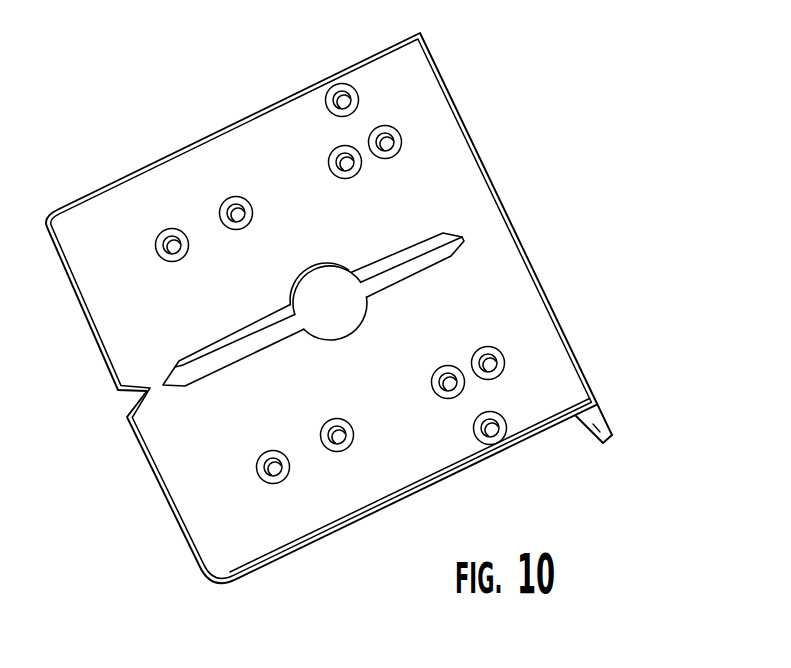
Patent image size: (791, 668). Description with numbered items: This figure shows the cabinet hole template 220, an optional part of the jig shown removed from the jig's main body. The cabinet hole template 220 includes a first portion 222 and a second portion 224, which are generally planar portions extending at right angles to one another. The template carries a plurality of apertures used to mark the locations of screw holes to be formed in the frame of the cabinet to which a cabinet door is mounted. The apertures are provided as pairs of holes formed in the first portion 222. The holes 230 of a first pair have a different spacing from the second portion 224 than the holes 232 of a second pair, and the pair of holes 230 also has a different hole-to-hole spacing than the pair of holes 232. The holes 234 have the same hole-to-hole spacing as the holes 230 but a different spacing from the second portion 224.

The cabinet hole template 220 is at (282, 573).
The first portion 222 is at (332, 520).
The second portion 224 is at (593, 428).
The holes 230 is at (385, 138).
The holes 232 is at (341, 97).
The holes 234 is at (238, 207).